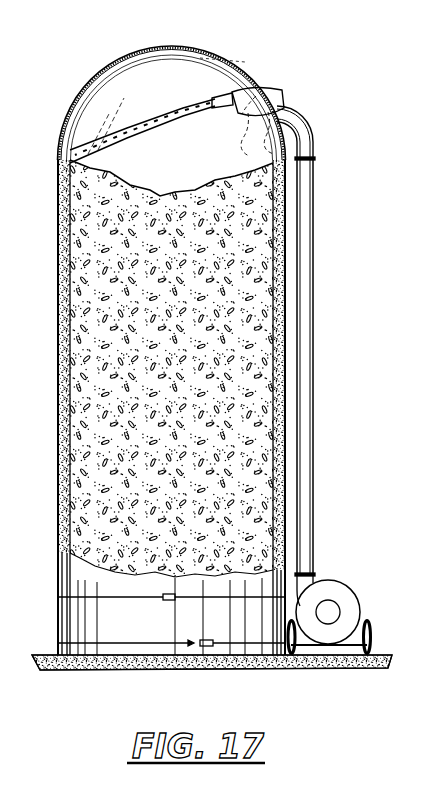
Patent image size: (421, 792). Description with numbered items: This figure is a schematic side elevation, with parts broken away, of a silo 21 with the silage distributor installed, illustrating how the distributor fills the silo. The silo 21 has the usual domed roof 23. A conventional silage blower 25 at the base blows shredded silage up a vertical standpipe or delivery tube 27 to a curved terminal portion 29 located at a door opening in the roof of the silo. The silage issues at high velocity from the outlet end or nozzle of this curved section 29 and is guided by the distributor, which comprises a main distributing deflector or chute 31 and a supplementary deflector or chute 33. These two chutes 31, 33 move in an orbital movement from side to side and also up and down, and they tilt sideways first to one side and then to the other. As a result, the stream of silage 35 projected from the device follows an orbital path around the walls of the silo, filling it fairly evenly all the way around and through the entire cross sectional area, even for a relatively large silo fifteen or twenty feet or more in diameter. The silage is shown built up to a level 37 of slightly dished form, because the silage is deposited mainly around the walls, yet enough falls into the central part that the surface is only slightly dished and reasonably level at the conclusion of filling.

The silo 21 is at (58, 296).
The domed roof 23 is at (132, 50).
The silage blower 25 is at (343, 589).
The vertical standpipe or delivery tube 27 is at (307, 354).
The curved terminal portion 29 is at (306, 128).
The main distributing deflector or chute 31 is at (269, 92).
The supplementary deflector or chute 33 is at (223, 96).
The stream of silage 35 is at (165, 119).
The silage level 37 is at (212, 175).